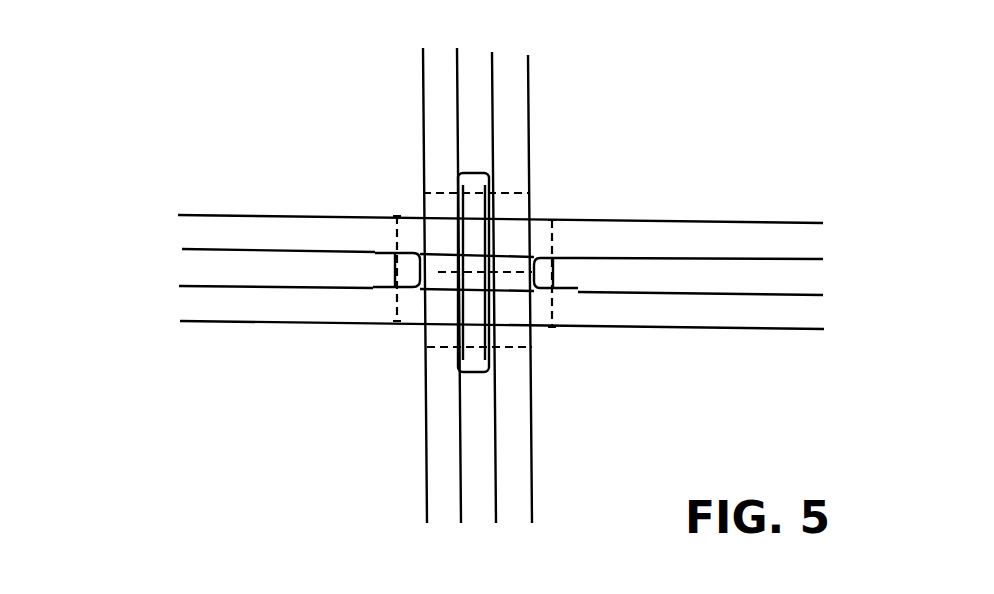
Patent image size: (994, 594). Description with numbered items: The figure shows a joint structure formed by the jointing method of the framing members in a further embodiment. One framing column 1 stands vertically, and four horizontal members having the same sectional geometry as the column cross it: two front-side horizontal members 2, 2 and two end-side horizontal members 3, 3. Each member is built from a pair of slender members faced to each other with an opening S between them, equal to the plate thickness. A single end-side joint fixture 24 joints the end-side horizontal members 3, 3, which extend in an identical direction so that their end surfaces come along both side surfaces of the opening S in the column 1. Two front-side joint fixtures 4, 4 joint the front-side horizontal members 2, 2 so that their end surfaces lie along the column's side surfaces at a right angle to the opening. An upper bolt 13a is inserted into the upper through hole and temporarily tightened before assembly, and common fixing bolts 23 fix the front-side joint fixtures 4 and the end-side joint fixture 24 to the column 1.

The framing column 1 is at (440, 246).
The front-side horizontal member 2 is at (273, 216).
The end-side horizontal member 3 is at (530, 83).
The front-side joint fixture 4 is at (375, 288).
The upper bolt 13a is at (392, 310).
The fixing bolt 23 is at (432, 268).
The end-side joint fixture 24 is at (474, 320).
The opening S is at (473, 75).